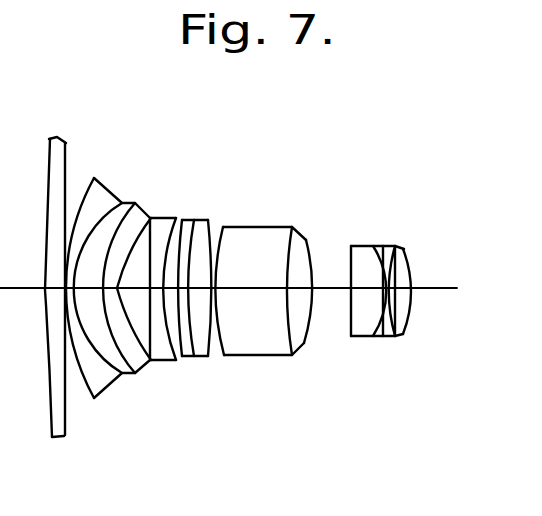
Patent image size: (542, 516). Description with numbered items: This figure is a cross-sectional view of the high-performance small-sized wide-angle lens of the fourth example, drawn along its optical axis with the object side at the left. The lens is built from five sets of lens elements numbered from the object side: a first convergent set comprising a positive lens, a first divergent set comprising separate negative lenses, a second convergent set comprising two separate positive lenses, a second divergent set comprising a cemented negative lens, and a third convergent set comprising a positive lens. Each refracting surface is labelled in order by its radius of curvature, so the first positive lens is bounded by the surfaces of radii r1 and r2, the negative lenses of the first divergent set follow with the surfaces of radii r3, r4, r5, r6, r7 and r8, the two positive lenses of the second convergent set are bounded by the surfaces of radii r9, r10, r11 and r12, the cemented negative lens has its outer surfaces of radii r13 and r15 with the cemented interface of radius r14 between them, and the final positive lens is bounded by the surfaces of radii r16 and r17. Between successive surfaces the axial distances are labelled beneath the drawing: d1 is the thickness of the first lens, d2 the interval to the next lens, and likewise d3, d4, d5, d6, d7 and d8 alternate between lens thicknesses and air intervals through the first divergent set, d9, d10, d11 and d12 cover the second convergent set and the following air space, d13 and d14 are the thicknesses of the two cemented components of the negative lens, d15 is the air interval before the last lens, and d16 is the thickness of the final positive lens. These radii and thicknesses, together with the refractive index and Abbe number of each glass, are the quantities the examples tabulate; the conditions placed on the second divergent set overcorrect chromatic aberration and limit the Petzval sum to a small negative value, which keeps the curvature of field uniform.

The radius of curvature of the first lens surface r1 is at (54, 265).
The radius of curvature of the second lens surface r2 is at (74, 264).
The radius of curvature of the third lens surface r3 is at (87, 245).
The radius of curvature of the fourth lens surface r4 is at (104, 233).
The radius of curvature of the fifth lens surface r5 is at (135, 226).
The radius of curvature of the sixth lens surface r6 is at (167, 226).
The radius of curvature of the seventh lens surface r7 is at (186, 224).
The radius of curvature of the eighth lens surface r8 is at (203, 224).
The radius of curvature of the ninth lens surface r9 is at (225, 224).
The radius of curvature of the tenth lens surface r10 is at (247, 224).
The radius of curvature of the eleventh lens surface r11 is at (270, 224).
The radius of curvature of the twelfth lens surface r12 is at (325, 218).
The radius of curvature of the thirteenth lens surface r13 is at (366, 214).
The radius of curvature of the fourteenth lens surface r14 is at (394, 214).
The radius of curvature of the fifteenth lens surface r15 is at (415, 214).
The radius of curvature of the sixteenth lens surface r16 is at (431, 214).
The radius of curvature of the seventeenth lens surface r17 is at (455, 213).
The thickness of the first lens d1 is at (55, 389).
The interval after the second lens surface d2 is at (76, 389).
The thickness of the third lens d3 is at (88, 389).
The interval after the fourth lens surface d4 is at (104, 389).
The thickness of the fifth lens d5 is at (130, 389).
The interval after the sixth lens surface d6 is at (162, 389).
The thickness of the seventh lens d7 is at (182, 389).
The interval after the eighth lens surface d8 is at (203, 389).
The thickness of the ninth lens d9 is at (233, 389).
The interval after the tenth lens surface d10 is at (254, 389).
The thickness of the eleventh lens d11 is at (304, 389).
The interval after the twelfth lens surface d12 is at (336, 389).
The thickness of the thirteenth lens d13 is at (372, 389).
The thickness of the fourteenth lens d14 is at (402, 389).
The interval after the fifteenth lens surface d15 is at (423, 389).
The thickness of the sixteenth lens d16 is at (443, 389).